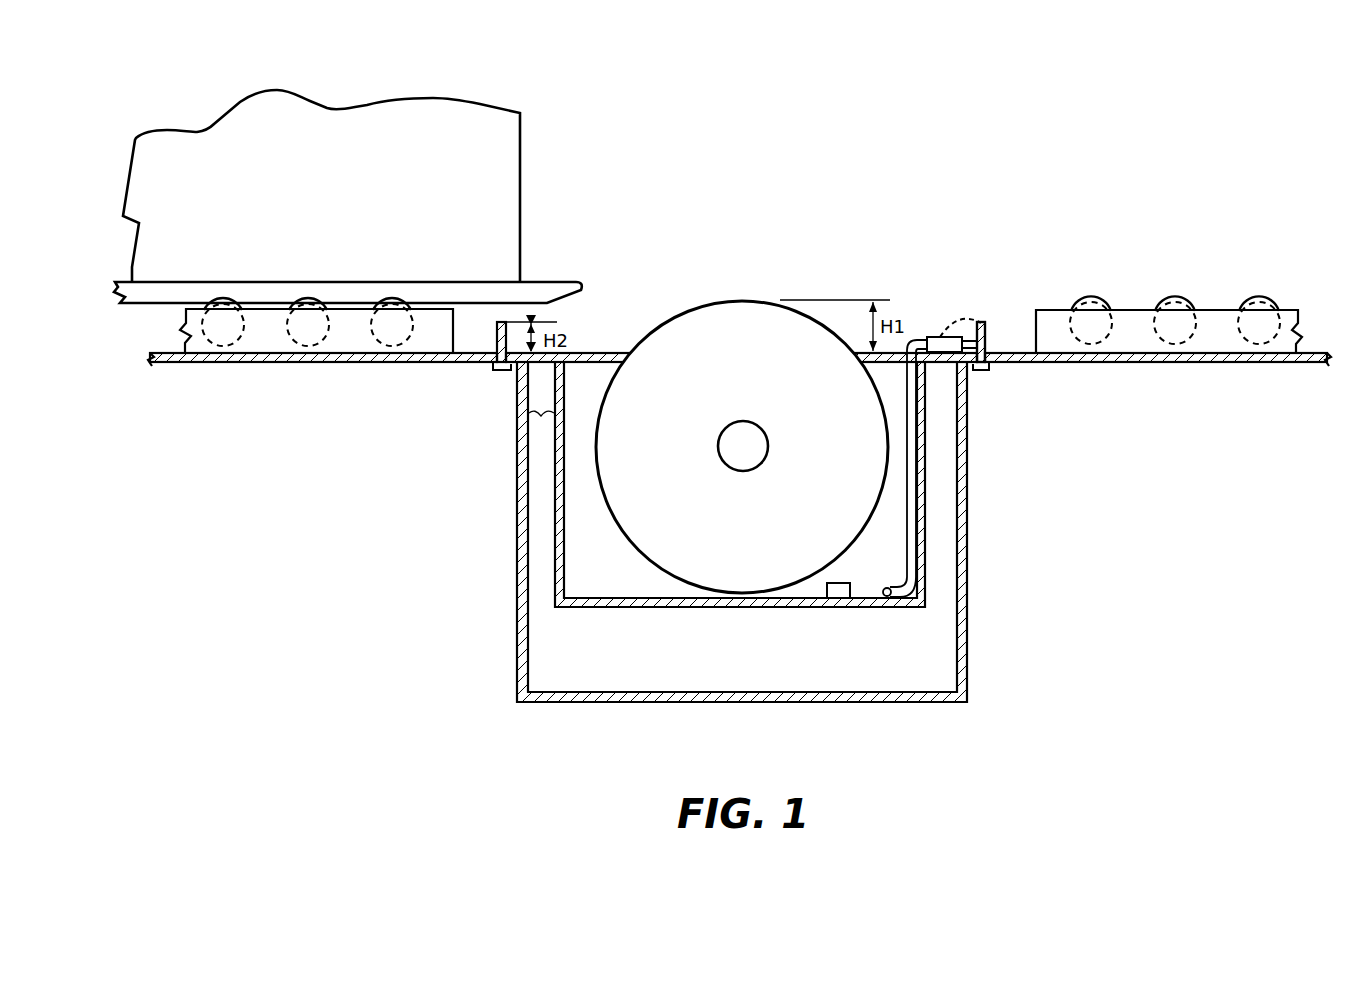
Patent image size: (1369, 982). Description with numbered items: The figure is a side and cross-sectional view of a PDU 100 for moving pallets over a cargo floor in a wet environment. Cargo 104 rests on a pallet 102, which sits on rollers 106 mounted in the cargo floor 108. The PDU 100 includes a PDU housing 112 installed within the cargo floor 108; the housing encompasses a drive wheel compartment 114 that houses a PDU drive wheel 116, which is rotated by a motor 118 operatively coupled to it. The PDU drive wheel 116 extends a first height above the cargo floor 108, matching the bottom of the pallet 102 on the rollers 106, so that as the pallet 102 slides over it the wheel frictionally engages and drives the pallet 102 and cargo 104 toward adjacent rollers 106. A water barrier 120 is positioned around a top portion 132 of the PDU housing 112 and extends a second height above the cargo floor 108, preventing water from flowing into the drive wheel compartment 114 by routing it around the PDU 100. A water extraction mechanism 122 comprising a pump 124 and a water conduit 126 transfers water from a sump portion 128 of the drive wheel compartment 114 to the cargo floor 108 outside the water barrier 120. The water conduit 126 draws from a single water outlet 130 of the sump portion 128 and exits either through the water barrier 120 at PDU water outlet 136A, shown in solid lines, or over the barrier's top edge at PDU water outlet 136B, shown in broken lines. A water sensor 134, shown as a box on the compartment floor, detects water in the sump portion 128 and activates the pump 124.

The PDU 100 is at (975, 87).
The pallet 102 is at (540, 292).
The cargo 104 is at (481, 121).
The rollers 106 is at (212, 338).
The cargo floor 108 is at (335, 360).
The PDU housing 112 is at (517, 525).
The drive wheel compartment 114 is at (645, 607).
The PDU drive wheel 116 is at (703, 322).
The motor 118 is at (743, 446).
The water barrier 120 is at (497, 338).
The water extraction mechanism 122 is at (963, 288).
The pump 124 is at (945, 335).
The water conduit 126 is at (912, 505).
The sump portion 128 is at (609, 580).
The single water outlet 130 is at (884, 598).
The top portion 132 is at (542, 405).
The water sensor 134 is at (835, 598).
The PDU water outlet 136A is at (988, 318).
The PDU water outlet 136B is at (983, 302).